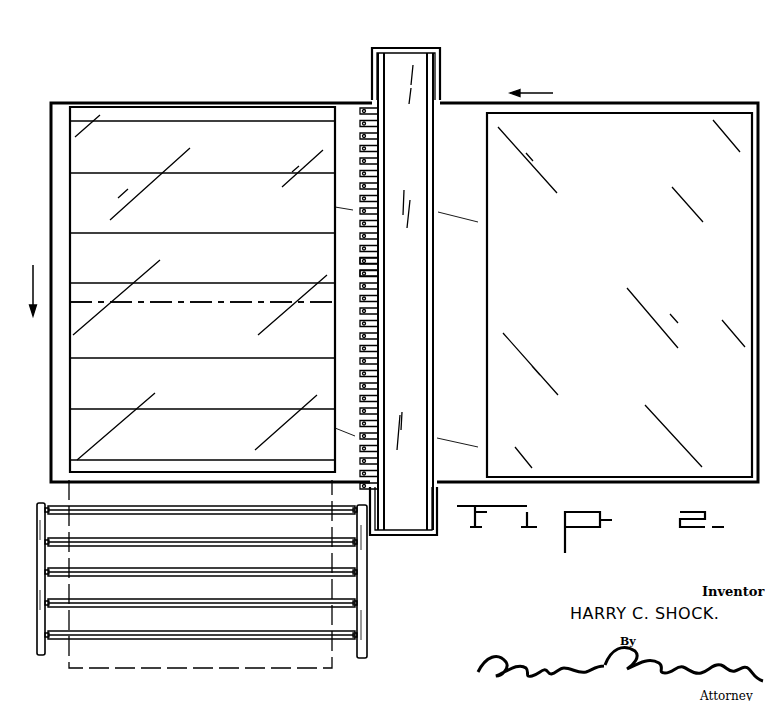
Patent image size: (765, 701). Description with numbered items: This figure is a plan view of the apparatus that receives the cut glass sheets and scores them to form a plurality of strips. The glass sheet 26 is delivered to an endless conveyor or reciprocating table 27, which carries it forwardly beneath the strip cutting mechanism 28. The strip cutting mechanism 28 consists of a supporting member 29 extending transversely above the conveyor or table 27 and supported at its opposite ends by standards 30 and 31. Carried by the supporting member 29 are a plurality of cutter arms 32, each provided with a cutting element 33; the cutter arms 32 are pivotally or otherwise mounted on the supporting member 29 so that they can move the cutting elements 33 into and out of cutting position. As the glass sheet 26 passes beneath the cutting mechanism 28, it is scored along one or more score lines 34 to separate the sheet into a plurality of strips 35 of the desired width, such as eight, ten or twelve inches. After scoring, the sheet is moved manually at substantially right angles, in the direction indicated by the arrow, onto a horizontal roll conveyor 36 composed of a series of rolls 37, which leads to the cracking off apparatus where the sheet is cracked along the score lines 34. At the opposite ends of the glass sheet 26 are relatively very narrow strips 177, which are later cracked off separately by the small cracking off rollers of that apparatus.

The glass sheet 26 is at (225, 130).
The endless conveyor or reciprocating table 27 is at (464, 117).
The strip cutting mechanism 28 is at (429, 304).
The supporting member 29 is at (419, 399).
The standard 30 is at (426, 53).
The standard 31 is at (416, 536).
The cutter arms 32 is at (393, 280).
The cutting element 33 is at (362, 274).
The score lines 34 is at (241, 284).
The strips 35 is at (68, 422).
The horizontal roll conveyor 36 is at (366, 590).
The rolls 37 is at (130, 602).
The relatively narrow strip 177 is at (302, 121).